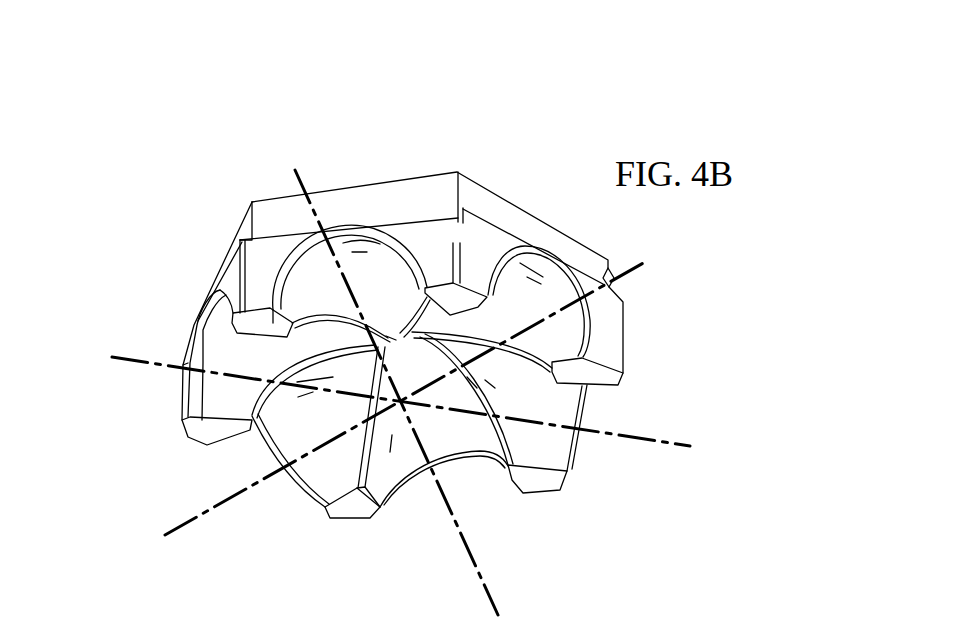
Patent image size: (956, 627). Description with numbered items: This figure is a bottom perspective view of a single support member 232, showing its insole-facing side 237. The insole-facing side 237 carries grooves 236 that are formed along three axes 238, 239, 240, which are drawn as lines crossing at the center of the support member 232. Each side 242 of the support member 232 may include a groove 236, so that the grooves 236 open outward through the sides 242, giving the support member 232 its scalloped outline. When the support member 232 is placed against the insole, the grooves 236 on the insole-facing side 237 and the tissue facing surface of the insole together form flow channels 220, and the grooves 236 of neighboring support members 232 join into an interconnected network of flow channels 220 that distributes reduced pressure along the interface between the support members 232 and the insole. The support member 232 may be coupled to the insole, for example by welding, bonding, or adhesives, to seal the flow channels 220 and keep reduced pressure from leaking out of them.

The support member 232 is at (405, 320).
The flow channel 220 is at (297, 482).
The groove 236 is at (270, 432).
The insole-facing side 237 is at (447, 428).
The first axis 238 is at (494, 597).
The second axis 239 is at (677, 447).
The third axis 240 is at (630, 272).
The side 242 is at (188, 378).